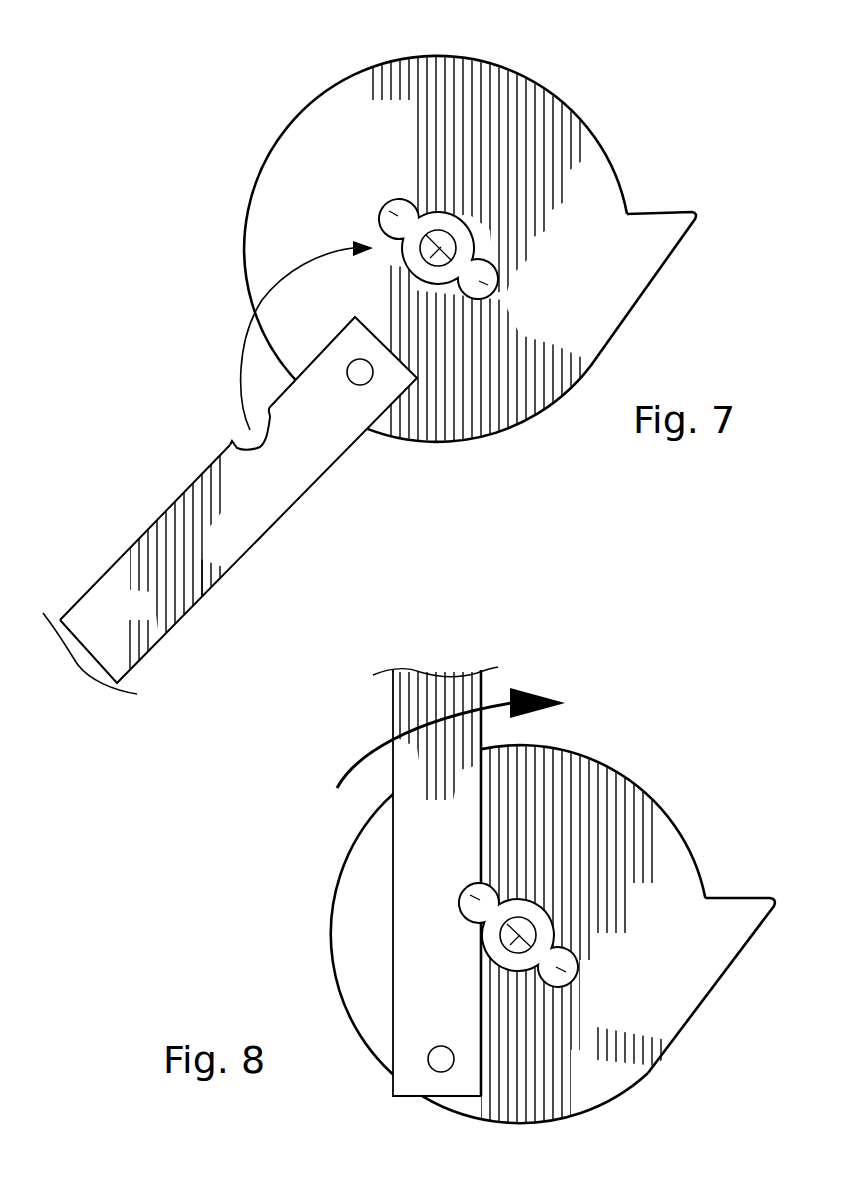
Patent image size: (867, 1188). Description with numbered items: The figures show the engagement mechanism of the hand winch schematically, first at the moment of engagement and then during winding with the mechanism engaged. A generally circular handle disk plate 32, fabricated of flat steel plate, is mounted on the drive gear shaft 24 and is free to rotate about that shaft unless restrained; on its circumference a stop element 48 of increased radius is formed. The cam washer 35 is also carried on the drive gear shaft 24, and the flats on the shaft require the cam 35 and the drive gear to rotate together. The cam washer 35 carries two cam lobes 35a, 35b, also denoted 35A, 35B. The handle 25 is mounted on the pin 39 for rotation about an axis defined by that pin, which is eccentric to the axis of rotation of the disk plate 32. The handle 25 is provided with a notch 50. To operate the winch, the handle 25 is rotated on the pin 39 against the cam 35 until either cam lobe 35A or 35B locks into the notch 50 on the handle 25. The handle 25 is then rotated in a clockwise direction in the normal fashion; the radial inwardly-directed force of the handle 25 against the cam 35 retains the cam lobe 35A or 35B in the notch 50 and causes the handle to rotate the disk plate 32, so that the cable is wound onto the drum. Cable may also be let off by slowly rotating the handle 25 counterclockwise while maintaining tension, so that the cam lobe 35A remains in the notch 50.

In FIG. 7, the drive gear shaft 24 is at (413, 297).
In FIG. 8, the drive gear shaft 24 is at (513, 950).
In FIG. 7, the handle 25 is at (103, 607).
In FIG. 8, the handle 25 is at (407, 867).
In FIG. 7, the handle disk plate 32 is at (480, 100).
In FIG. 8, the handle disk plate 32 is at (570, 793).
In FIG. 7, the cam washer 35 is at (413, 297).
In FIG. 8, the cam washer 35 is at (546, 925).
In FIG. 7, the cam lobe 35a is at (390, 207).
In FIG. 7, the cam lobe 35b is at (495, 289).
In FIG. 8, the cam lobe 35A is at (466, 892).
In FIG. 8, the cam lobe 35B is at (562, 965).
In FIG. 7, the pin 39 is at (355, 386).
In FIG. 8, the pin 39 is at (437, 1057).
In FIG. 7, the stop element 48 is at (660, 223).
In FIG. 8, the stop element 48 is at (735, 897).
In FIG. 7, the notch 50 is at (238, 445).